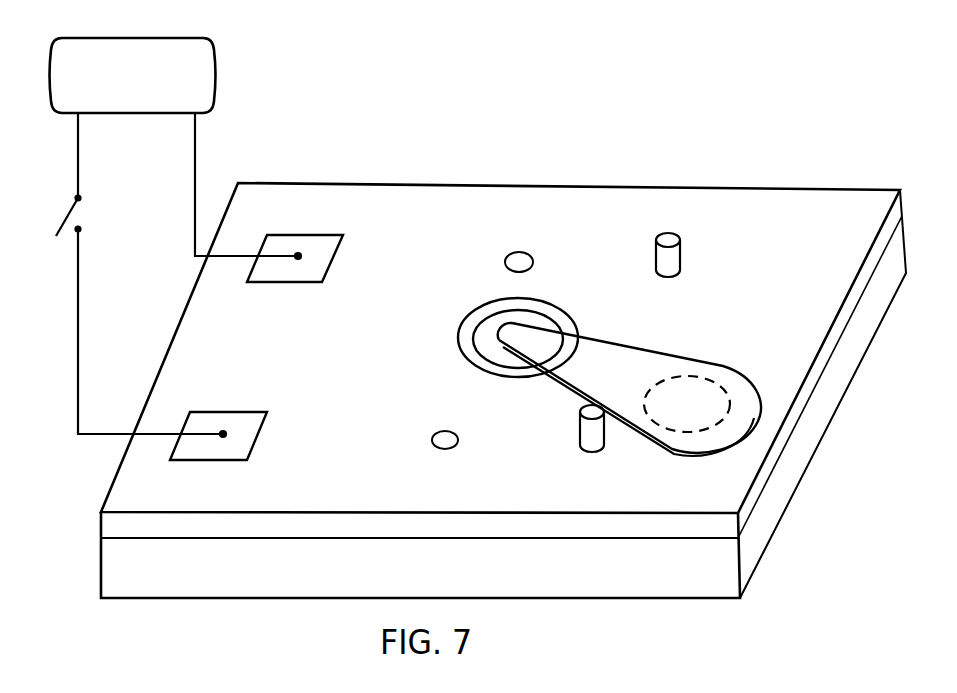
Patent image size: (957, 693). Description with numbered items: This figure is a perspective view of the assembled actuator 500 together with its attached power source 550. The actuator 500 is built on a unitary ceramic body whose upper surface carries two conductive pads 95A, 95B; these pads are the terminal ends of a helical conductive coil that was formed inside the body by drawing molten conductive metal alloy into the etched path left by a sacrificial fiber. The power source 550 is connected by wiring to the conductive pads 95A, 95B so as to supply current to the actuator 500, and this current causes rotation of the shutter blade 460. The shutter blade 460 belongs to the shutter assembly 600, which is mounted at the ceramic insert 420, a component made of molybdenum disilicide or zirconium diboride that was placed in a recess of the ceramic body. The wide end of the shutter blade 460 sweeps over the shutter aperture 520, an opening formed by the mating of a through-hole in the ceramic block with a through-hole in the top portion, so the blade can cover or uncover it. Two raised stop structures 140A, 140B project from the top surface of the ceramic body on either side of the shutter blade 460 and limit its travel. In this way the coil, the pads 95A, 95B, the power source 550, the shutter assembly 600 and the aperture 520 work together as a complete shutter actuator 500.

The actuator 500 is at (618, 152).
The power source 550 is at (215, 78).
The conductive pad 95A is at (327, 252).
The conductive pad 95B is at (250, 425).
The ceramic insert 420 is at (552, 310).
The shutter blade 460 is at (646, 360).
The shutter aperture 520 is at (707, 382).
The shutter assembly 600 is at (500, 380).
The raised stop structure 140A is at (685, 248).
The raised stop structure 140B is at (586, 441).